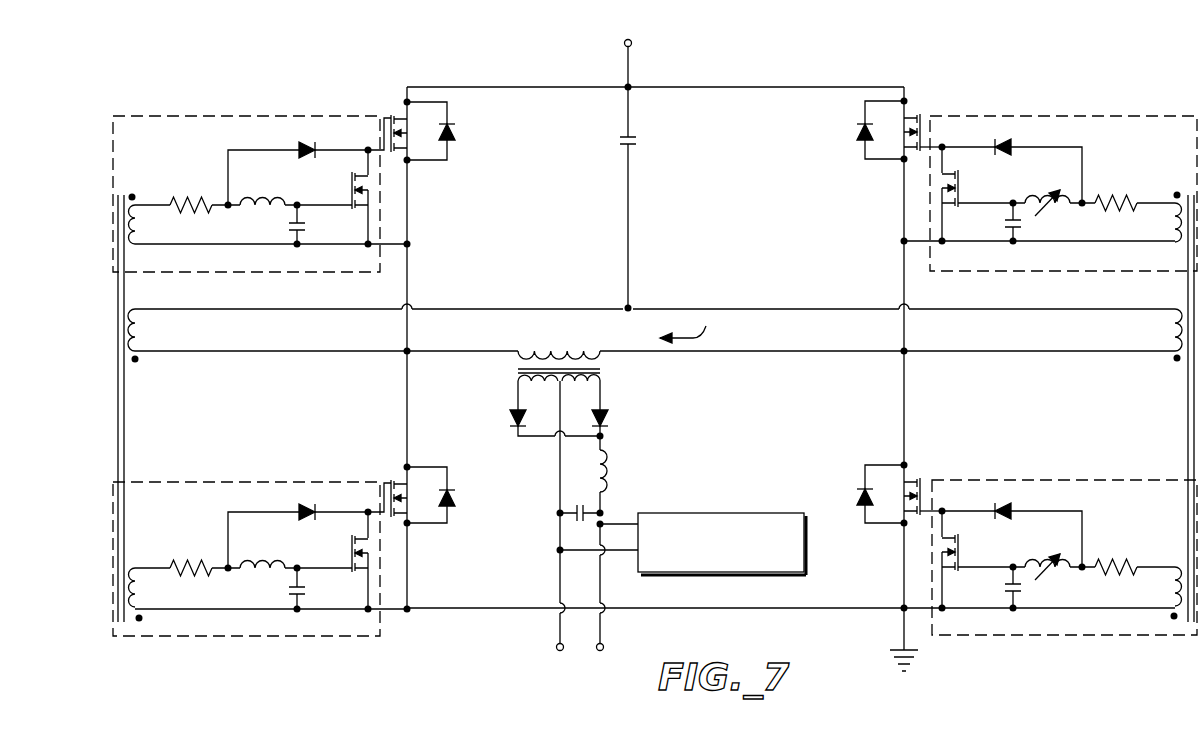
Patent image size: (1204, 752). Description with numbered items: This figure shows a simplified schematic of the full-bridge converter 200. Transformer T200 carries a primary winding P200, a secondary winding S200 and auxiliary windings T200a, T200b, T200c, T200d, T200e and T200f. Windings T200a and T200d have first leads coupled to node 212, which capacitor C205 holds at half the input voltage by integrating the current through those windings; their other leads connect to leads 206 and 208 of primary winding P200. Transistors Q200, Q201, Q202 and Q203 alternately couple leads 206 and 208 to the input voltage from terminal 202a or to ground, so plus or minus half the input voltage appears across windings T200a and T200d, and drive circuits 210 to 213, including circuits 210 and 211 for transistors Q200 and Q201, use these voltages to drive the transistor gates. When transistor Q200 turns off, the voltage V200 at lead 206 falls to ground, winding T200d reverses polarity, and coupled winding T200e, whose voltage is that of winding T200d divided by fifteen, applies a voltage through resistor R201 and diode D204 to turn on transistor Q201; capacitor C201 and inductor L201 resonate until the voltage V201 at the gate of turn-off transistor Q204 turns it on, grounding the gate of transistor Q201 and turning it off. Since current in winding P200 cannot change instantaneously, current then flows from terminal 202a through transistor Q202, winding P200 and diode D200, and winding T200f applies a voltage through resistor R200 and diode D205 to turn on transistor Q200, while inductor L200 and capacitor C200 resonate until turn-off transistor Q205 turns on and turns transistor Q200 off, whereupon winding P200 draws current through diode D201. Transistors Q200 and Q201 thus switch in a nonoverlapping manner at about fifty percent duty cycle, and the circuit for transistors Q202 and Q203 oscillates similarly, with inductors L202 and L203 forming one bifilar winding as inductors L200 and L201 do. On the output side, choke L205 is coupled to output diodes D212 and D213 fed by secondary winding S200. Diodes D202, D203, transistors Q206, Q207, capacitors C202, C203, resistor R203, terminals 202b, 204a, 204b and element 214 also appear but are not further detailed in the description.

The full-bridge converter 200 is at (1014, 66).
The terminal 202a is at (627, 72).
The input ground terminal 202b is at (902, 643).
The negative output terminal 204a is at (558, 634).
The positive output terminal 204b is at (604, 634).
The lead 206 is at (490, 350).
The lead 208 is at (905, 350).
The drive circuit 210 is at (205, 116).
The drive circuit 211 is at (165, 482).
The node 212 is at (629, 256).
The drive circuit 213 is at (1010, 480).
The regulator 214 is at (807, 566).
The transistor Q200 is at (384, 118).
The transistor Q201 is at (384, 483).
The transistor Q202 is at (921, 118).
The transistor Q203 is at (921, 482).
The turn-off transistor Q204 is at (355, 545).
The turn-off transistor Q205 is at (355, 178).
The drive transistor Q206 is at (953, 540).
The drive transistor Q207 is at (953, 178).
The diode D200 is at (455, 138).
The diode D201 is at (455, 503).
The diode D202 is at (857, 138).
The diode D203 is at (857, 502).
The diode D204 is at (305, 508).
The diode D205 is at (305, 142).
The output diode D212 is at (508, 420).
The output diode D213 is at (610, 418).
The capacitor C200 is at (305, 230).
The capacitor C201 is at (305, 594).
The capacitor C202 is at (1005, 227).
The capacitor C203 is at (1005, 592).
The capacitor C205 is at (636, 143).
The inductor L200 is at (259, 212).
The inductor L201 is at (263, 575).
The inductor L202 is at (1052, 212).
The inductor L203 is at (1052, 576).
The output choke L205 is at (612, 478).
The resistor R200 is at (181, 198).
The resistor R201 is at (181, 562).
The resistor R203 is at (1122, 561).
The transformer T200 is at (126, 405).
The winding T200a is at (1168, 310).
The winding T200b is at (1165, 612).
The winding T200c is at (1168, 245).
The winding T200d is at (140, 310).
The winding T200e is at (143, 612).
The winding T200f is at (138, 250).
The primary winding P200 is at (578, 352).
The secondary winding S200 is at (605, 388).
The voltage V200 is at (410, 350).
The voltage V201 is at (899, 356).